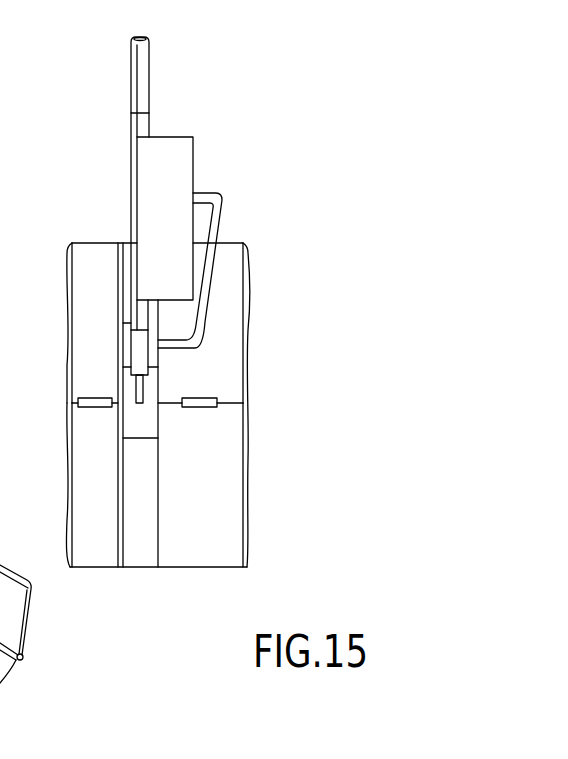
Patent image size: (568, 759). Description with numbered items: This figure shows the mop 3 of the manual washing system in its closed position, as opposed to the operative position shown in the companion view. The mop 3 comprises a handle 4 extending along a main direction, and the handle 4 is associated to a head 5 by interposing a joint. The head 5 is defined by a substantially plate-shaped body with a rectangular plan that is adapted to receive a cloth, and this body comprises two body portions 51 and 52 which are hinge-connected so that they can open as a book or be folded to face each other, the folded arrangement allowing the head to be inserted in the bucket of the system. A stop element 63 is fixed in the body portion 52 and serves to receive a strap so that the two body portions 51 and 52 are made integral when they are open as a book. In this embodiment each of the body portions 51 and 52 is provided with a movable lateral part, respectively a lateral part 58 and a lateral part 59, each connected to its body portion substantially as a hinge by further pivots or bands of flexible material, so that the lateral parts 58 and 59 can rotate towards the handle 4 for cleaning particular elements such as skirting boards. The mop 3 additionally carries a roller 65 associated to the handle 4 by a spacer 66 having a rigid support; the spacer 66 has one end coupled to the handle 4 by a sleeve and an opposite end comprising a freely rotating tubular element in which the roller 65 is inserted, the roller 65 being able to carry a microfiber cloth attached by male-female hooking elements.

The mop 3 is at (153, 207).
The handle 4 is at (143, 68).
The head 5 is at (168, 380).
The body portion 51 is at (229, 282).
The body portion 52 is at (225, 493).
The movable lateral part 58 is at (87, 273).
The movable lateral part 59 is at (83, 455).
The stop element 63 is at (0, 740).
The roller 65 is at (147, 153).
The spacer 66 is at (203, 195).